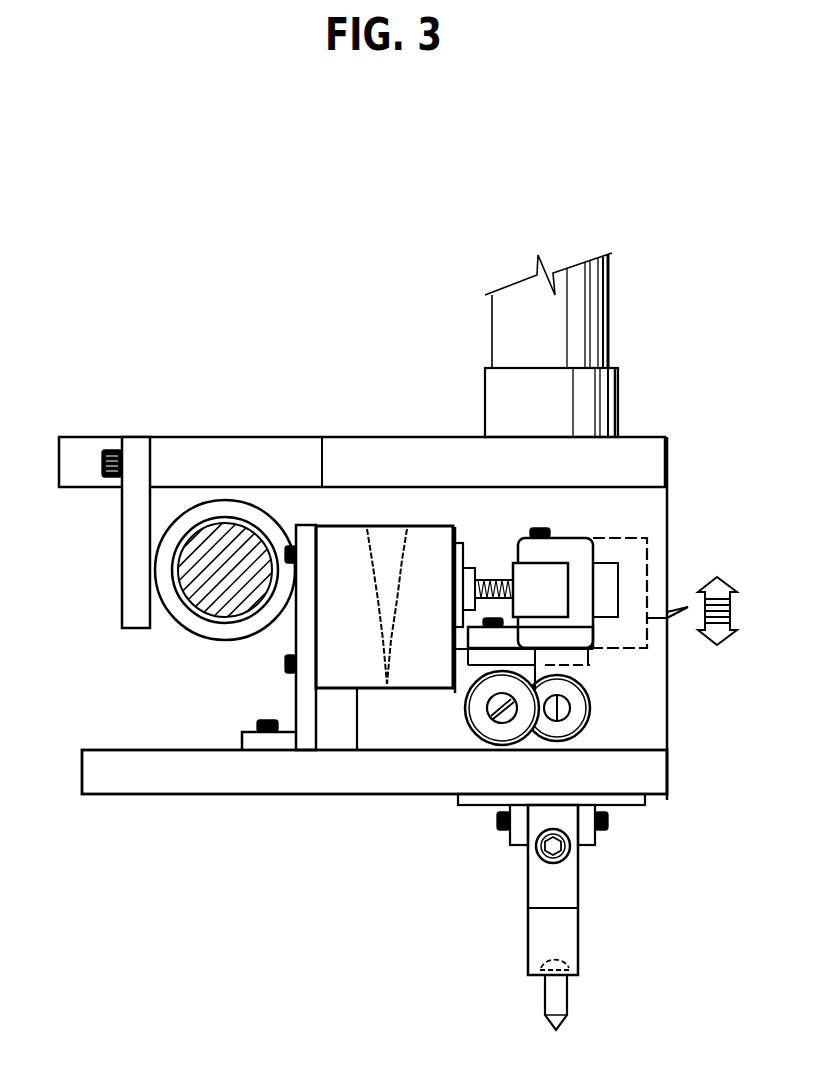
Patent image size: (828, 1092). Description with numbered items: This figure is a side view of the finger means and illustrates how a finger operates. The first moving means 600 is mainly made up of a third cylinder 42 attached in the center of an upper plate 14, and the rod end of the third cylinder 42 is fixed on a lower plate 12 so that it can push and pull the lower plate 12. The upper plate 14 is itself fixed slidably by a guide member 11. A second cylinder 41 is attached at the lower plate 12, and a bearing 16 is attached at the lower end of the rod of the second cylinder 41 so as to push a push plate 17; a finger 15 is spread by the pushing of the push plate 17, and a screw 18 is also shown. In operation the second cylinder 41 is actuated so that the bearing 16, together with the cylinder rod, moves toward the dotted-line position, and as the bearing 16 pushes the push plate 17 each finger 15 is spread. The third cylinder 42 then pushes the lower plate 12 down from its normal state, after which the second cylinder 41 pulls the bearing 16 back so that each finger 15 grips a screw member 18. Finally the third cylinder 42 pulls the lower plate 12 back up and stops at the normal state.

The guide member 11 is at (185, 567).
The lower plate 12 is at (238, 783).
The upper plate 14 is at (372, 448).
The finger 15 is at (535, 925).
The bearing 16 is at (478, 728).
The push plate 17 is at (600, 748).
The screw member 18 is at (543, 988).
The second cylinder 41 is at (377, 685).
The third cylinder 42 is at (490, 393).
The first moving means 600 is at (632, 352).